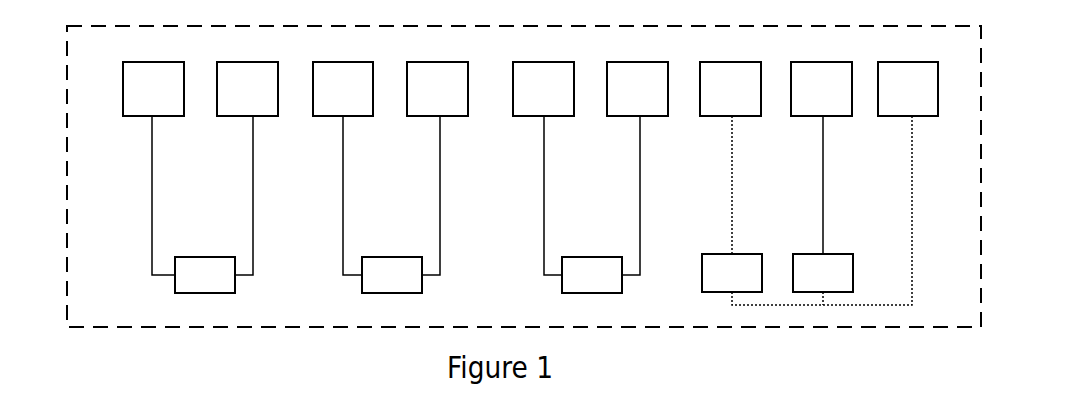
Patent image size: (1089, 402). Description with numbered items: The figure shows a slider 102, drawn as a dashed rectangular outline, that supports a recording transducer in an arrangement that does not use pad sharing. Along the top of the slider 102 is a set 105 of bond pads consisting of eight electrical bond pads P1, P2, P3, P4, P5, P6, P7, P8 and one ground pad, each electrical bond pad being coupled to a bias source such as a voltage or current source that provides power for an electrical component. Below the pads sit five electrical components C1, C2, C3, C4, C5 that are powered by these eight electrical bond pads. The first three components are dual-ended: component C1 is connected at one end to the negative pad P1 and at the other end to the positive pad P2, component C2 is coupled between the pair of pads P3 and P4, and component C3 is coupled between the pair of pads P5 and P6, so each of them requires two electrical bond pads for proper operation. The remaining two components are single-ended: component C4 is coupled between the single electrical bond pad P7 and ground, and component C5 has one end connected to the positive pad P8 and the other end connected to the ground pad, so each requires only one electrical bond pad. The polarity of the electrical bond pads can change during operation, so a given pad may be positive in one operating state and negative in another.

The slider 102 is at (981, 188).
The set of bond pads 105 is at (950, 83).
The negative pad P1 is at (153, 89).
The positive pad P2 is at (247, 89).
The electrical bond pad P3 is at (343, 89).
The electrical bond pad P4 is at (437, 89).
The electrical bond pad P5 is at (543, 89).
The electrical bond pad P6 is at (637, 89).
The electrical bond pad P7 is at (730, 89).
The positive pad P8 is at (821, 89).
The dual-ended electrical component C1 is at (202, 204).
The dual-ended electrical component C2 is at (391, 204).
The dual-ended electrical component C3 is at (592, 204).
The single-ended electrical component C4 is at (807, 210).
The single-ended electrical component C5 is at (823, 210).